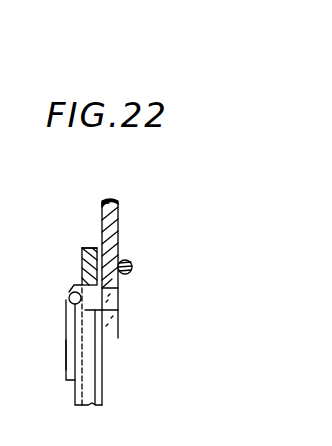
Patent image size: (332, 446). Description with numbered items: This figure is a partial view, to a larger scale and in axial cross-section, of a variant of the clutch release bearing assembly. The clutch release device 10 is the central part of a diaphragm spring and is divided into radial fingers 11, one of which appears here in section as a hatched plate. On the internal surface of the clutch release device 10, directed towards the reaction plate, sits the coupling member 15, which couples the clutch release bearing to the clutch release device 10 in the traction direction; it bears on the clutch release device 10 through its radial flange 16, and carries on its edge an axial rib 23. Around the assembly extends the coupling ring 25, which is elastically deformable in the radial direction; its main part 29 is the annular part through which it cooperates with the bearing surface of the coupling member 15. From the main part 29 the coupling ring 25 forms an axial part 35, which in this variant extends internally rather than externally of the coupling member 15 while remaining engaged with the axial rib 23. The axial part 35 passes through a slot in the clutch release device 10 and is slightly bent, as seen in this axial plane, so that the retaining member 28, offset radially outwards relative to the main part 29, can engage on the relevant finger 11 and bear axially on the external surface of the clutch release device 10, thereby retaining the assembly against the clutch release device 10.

The clutch release device 10 is at (118, 201).
The radial fingers 11 is at (102, 201).
The coupling member 15 is at (82, 249).
The radial flange 16 is at (82, 268).
The axial rib 23 is at (70, 293).
The coupling ring 25 is at (66, 326).
The retaining member 28 is at (130, 262).
The main part 29 is at (67, 352).
The axial parts 35 is at (118, 313).